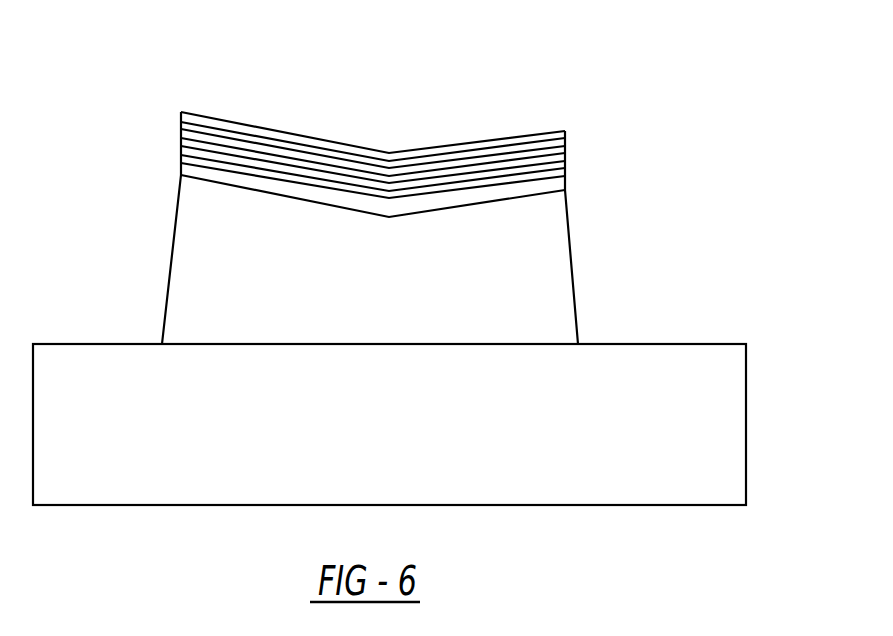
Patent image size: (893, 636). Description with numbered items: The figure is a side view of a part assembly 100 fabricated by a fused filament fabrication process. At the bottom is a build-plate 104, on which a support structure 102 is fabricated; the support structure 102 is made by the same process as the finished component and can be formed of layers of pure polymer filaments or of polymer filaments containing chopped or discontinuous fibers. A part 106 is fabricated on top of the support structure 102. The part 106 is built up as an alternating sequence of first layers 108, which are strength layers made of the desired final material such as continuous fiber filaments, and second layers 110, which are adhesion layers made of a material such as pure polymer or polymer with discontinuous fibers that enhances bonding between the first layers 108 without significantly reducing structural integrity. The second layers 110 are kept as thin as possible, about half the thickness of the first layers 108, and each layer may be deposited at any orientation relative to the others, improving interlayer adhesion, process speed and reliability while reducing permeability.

The part assembly 100 is at (410, 270).
The support structure 102 is at (537, 275).
The build-plate 104 is at (667, 362).
The part 106 is at (566, 131).
The first layers 108 is at (567, 146).
The second layers 110 is at (181, 139).